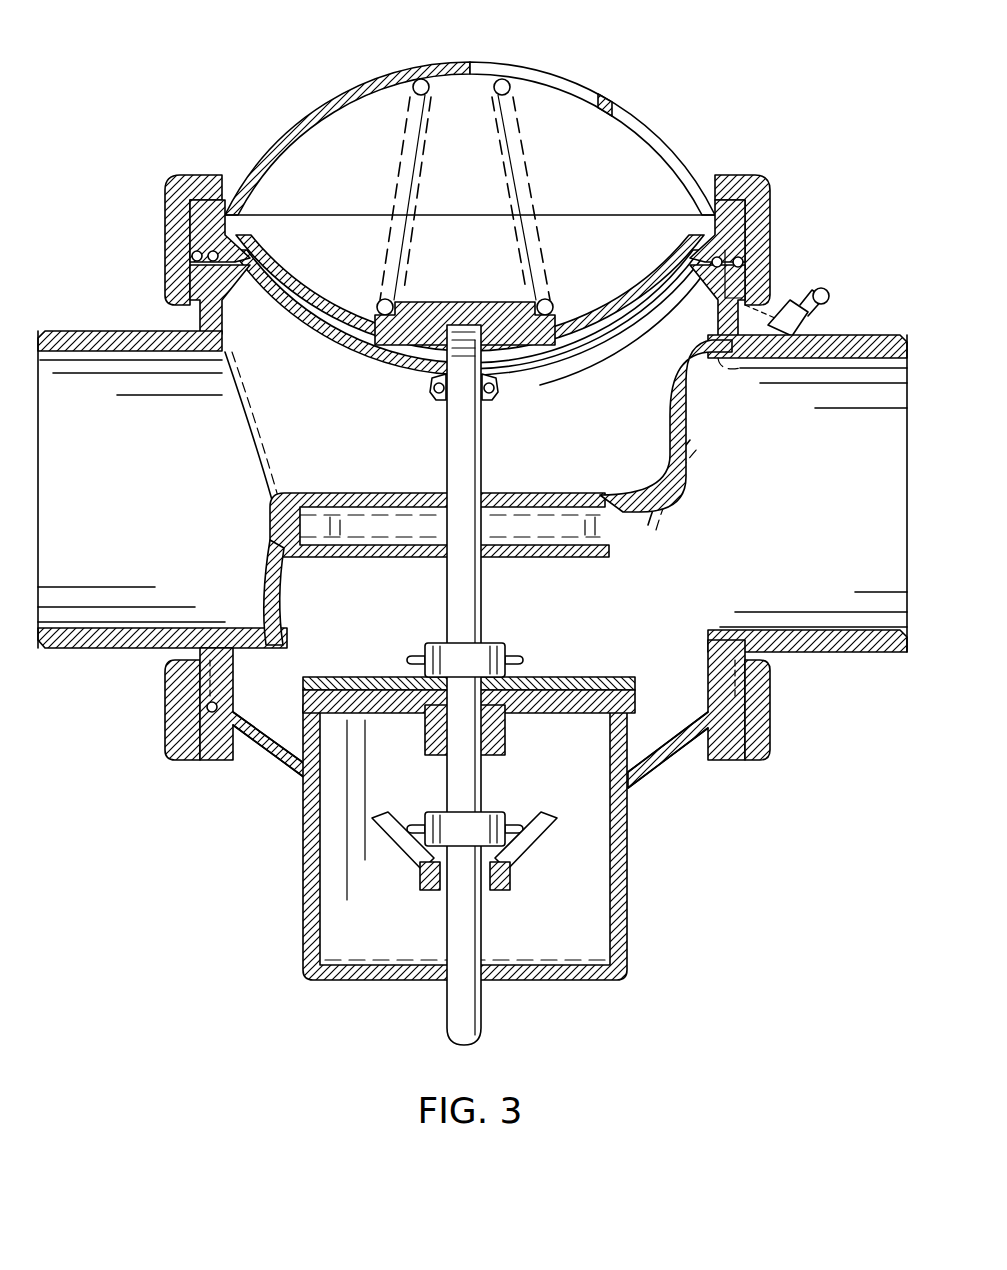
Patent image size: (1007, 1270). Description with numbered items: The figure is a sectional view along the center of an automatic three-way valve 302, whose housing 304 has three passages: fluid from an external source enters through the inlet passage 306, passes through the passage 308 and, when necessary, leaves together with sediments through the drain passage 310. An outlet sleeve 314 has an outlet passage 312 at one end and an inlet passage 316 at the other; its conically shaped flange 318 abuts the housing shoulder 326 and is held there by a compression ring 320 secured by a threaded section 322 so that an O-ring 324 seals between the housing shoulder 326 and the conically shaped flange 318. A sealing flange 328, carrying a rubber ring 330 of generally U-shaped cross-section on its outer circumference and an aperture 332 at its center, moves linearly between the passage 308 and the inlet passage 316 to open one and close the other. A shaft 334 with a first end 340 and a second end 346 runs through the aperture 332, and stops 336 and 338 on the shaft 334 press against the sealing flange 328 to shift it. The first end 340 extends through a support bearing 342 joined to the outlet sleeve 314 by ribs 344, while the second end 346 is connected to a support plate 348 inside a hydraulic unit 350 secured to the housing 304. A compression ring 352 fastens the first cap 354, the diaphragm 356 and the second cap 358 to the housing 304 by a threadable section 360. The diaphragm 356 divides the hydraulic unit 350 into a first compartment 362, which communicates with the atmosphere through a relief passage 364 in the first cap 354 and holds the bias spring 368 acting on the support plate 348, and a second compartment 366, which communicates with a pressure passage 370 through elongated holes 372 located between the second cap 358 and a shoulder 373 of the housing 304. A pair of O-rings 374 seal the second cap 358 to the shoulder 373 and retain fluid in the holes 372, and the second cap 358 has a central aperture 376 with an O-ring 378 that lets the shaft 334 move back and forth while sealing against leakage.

The automatic 3-way valve 302 is at (465, 118).
The housing 304 is at (190, 328).
The inlet passage 306 is at (777, 493).
The passage 308 is at (532, 530).
The drain passage 310 is at (162, 489).
The outlet passage 312 is at (392, 962).
The outlet sleeve 314 is at (620, 890).
The inlet passage 316 is at (548, 715).
The conically shaped flange 318 is at (652, 770).
The compression ring 320 is at (770, 738).
The threaded section 322 is at (742, 680).
The O-ring 324 is at (714, 712).
The housing shoulder 326 is at (226, 686).
The sealing flange 328 is at (542, 692).
The rubber ring 330 is at (335, 677).
The aperture 332 is at (458, 728).
The shaft 334 is at (496, 653).
The stop 336 is at (432, 644).
The stop 338 is at (432, 812).
The first end 340 is at (481, 1038).
The support bearing 342 is at (422, 893).
The ribs 344 is at (516, 868).
The second end 346 is at (458, 338).
The support plate 348 is at (482, 302).
The hydraulic unit 350 is at (470, 175).
The compression ring 352 is at (773, 236).
The first cap 354 is at (302, 114).
The diaphragm 356 is at (618, 306).
The second cap 358 is at (378, 375).
The threadable section 360 is at (756, 312).
The first compartment 362 is at (350, 172).
The relief passage 364 is at (610, 108).
The second compartment 366 is at (562, 378).
The bias spring 368 is at (509, 94).
The pressure passage 370 is at (830, 297).
The elongated holes 372 is at (648, 352).
The shoulder 373 is at (222, 308).
The O-rings 374 is at (282, 293).
The aperture 376 is at (453, 392).
The O-ring 378 is at (494, 392).